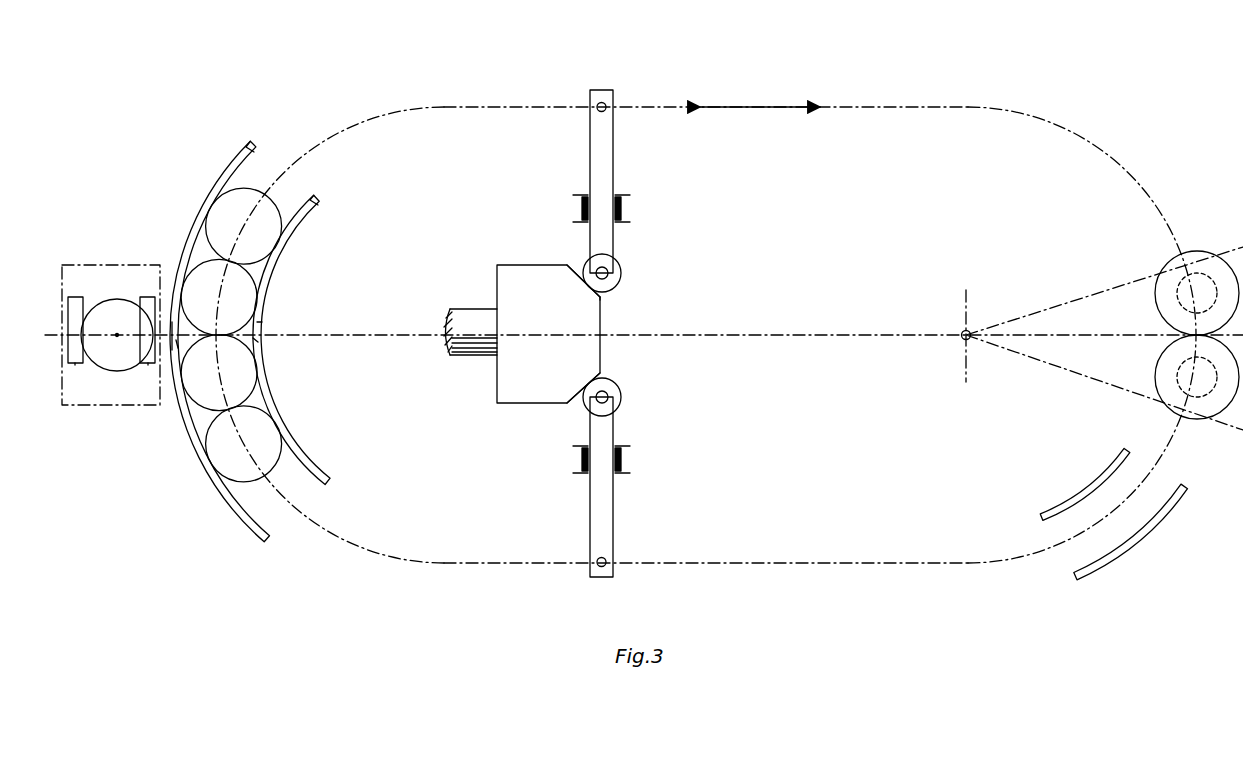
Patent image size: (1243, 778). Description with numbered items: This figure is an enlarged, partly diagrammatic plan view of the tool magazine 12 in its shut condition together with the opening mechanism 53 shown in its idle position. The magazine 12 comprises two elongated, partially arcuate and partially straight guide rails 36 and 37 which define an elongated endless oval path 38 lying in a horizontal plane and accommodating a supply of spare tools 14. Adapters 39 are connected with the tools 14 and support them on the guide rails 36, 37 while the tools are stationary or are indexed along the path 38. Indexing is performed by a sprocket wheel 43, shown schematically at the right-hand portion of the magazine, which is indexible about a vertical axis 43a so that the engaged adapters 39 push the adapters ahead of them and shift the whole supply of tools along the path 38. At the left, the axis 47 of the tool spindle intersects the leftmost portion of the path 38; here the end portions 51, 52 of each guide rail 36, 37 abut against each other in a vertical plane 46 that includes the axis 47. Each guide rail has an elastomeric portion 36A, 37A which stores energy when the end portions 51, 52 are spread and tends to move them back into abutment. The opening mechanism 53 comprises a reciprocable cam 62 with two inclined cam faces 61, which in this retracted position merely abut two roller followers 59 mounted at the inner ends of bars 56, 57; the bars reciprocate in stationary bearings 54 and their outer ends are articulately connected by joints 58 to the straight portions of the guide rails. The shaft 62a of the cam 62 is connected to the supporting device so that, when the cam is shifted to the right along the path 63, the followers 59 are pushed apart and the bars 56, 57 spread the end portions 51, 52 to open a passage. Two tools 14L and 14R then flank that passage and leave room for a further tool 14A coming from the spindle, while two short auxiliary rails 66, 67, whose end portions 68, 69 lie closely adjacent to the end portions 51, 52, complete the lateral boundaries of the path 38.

The magazine 12 is at (856, 98).
The spare tools 14 is at (258, 182).
The further tool 14A is at (114, 374).
The left tool 14L is at (236, 294).
The right tool 14R is at (236, 375).
The inner guide rail 36 is at (305, 206).
The elastomeric portion of inner guide rail 36A is at (1086, 490).
The outer guide rail 37 is at (242, 158).
The elastomeric portion of outer guide rail 37A is at (1148, 532).
The elongated path 38 is at (289, 186).
The adapters 39 is at (268, 230).
The sprocket wheel 43 is at (1075, 300).
The vertical axis 43a is at (962, 339).
The vertical plane 46 is at (256, 323).
The axis of tool spindle 47 is at (117, 336).
The end portion of guide rail 51 is at (170, 330).
The end portion of guide rail 52 is at (255, 341).
The opening mechanism 53 is at (621, 297).
The stationary bearings 54 is at (628, 211).
The upper bar 56 is at (607, 142).
The lower bar 57 is at (605, 503).
The joints 58 is at (601, 102).
The roller followers 59 is at (617, 266).
The cam faces 61 is at (604, 293).
The cam 62 is at (606, 335).
The shaft of cam 62a is at (462, 356).
The path of cam 63 is at (827, 340).
The auxiliary rail 66 is at (177, 348).
The auxiliary rail 67 is at (62, 385).
The end portions of auxiliary rail 68 is at (74, 297).
The end portions of auxiliary rail 69 is at (79, 366).